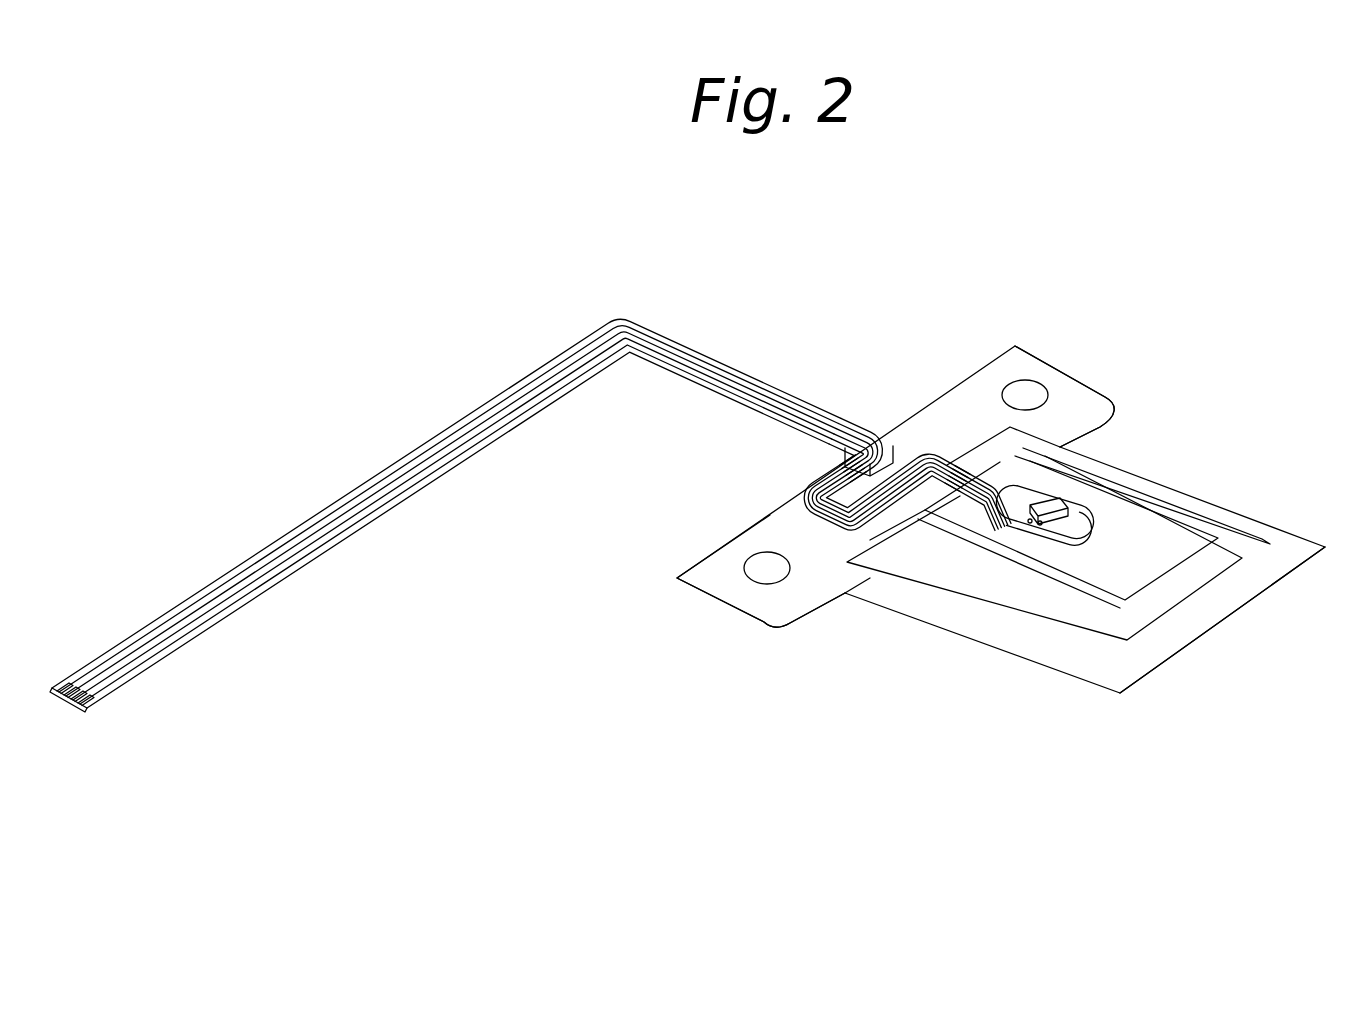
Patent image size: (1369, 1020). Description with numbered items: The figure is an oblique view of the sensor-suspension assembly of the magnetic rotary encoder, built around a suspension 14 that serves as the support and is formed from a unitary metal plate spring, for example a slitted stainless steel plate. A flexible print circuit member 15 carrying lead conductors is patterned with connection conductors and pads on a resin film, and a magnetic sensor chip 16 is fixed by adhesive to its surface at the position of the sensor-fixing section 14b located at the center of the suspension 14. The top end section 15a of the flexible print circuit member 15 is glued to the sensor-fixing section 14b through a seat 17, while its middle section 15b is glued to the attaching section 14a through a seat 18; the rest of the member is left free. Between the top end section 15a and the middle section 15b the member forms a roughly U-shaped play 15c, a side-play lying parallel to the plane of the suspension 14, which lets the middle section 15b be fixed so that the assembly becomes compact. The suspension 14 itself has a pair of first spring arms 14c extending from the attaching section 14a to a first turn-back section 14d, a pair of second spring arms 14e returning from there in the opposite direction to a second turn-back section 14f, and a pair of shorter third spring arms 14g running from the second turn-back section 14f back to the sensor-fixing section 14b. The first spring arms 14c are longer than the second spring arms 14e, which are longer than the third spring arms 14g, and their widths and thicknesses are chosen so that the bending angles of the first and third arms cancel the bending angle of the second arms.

The suspension 14 is at (1222, 368).
The attaching section 14a is at (937, 405).
The sensor-fixing section 14b is at (1133, 565).
The first spring arms 14c is at (1195, 493).
The first turn-back section 14d is at (1240, 598).
The second spring arms 14e is at (1240, 546).
The second turn-back section 14f is at (842, 575).
The third spring arms 14g is at (1065, 470).
The flexible print circuit member 15 is at (487, 415).
The top end section 15a is at (1003, 500).
The middle section 15b is at (855, 415).
The play 15c is at (800, 522).
The magnetic sensor chip 16 is at (1050, 512).
The seat 17 is at (1075, 545).
The seat 18 is at (888, 432).